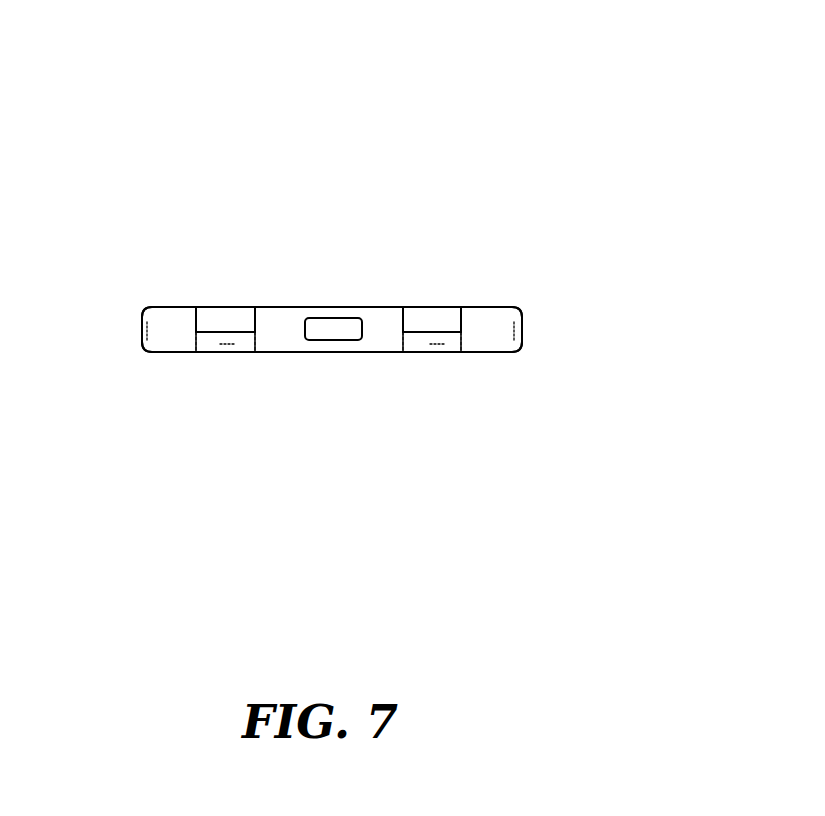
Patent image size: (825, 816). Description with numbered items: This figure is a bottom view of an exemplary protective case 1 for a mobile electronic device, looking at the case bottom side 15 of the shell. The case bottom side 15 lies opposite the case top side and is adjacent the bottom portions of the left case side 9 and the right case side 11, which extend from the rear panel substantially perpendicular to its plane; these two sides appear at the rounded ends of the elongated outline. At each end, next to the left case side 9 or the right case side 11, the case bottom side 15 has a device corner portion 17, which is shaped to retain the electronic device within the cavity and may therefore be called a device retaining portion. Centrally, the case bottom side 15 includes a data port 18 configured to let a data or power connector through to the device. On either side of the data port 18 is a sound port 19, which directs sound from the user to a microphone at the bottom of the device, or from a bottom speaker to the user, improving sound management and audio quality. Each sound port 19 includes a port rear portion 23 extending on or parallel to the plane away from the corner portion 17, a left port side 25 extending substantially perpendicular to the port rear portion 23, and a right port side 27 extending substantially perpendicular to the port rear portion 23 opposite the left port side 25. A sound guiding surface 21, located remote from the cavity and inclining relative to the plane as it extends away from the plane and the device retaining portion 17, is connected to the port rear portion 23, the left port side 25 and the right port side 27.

The protective case 1 is at (682, 93).
The left case side 9 is at (138, 325).
The right case side 11 is at (520, 320).
The case bottom side 15 is at (384, 318).
The device corner portion 17 is at (148, 325).
The data port 18 is at (340, 324).
The sound port 19 is at (225, 390).
The sound guiding surface 21 is at (220, 345).
The port rear portion 23 is at (232, 355).
The left port side 25 is at (196, 333).
The right port side 27 is at (255, 334).